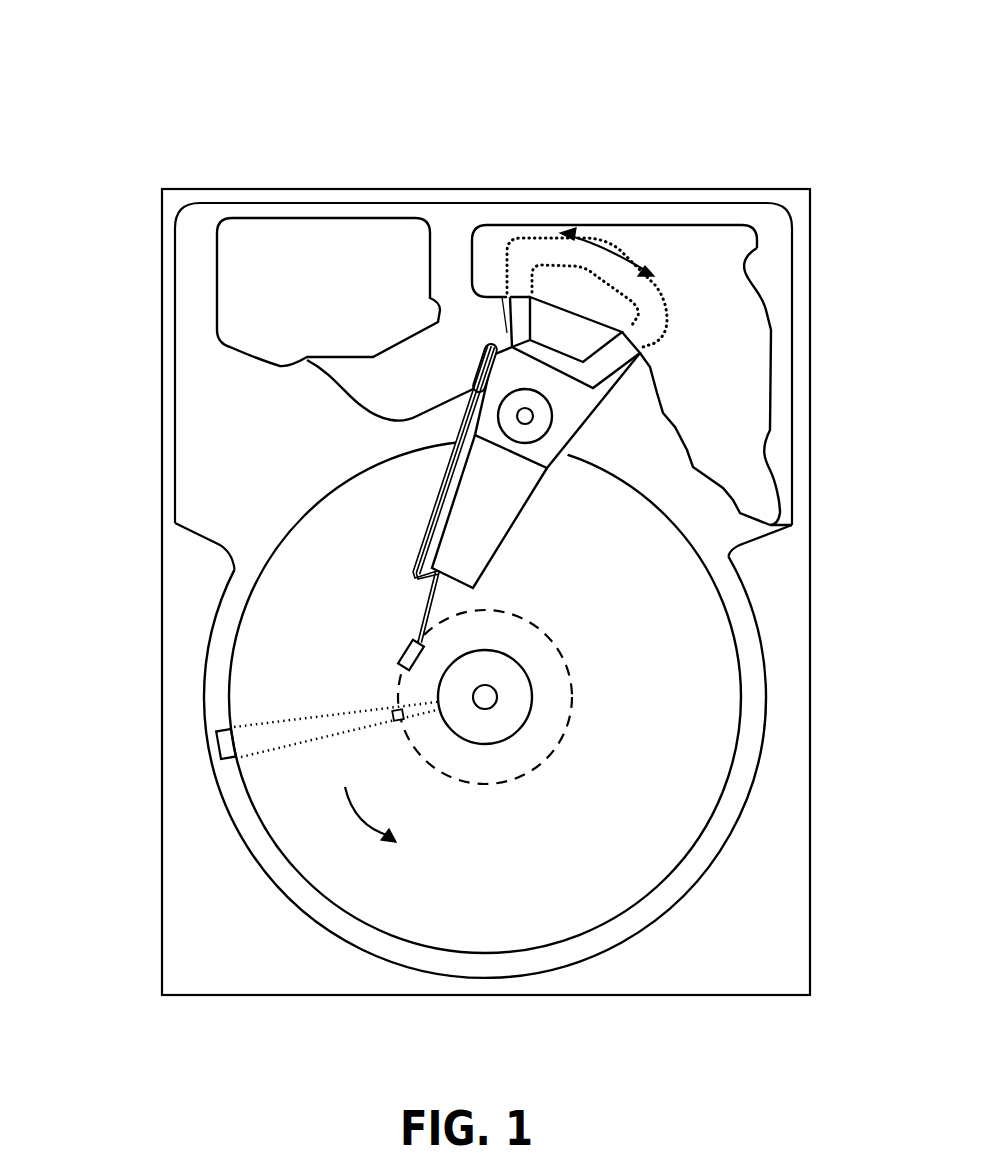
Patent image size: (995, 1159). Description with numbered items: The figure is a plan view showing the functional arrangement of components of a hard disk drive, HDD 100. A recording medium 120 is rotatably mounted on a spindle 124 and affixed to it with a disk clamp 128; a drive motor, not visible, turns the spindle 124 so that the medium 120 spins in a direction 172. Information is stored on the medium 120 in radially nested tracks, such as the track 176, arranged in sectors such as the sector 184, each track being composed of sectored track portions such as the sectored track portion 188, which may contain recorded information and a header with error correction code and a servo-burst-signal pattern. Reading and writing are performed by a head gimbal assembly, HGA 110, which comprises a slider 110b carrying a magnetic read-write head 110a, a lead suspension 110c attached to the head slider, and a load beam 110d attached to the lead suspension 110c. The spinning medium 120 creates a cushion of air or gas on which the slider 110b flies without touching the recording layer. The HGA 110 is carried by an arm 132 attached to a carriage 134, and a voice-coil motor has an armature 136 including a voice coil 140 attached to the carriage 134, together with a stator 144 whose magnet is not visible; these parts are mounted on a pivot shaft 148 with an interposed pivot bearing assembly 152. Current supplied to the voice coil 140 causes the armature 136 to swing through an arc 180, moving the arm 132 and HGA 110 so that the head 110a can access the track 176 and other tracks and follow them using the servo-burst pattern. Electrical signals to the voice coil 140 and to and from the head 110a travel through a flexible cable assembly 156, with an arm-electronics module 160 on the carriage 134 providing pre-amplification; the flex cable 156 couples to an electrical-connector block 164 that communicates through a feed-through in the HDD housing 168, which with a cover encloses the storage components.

The HDD 100 is at (92, 72).
The head gimbal assembly 110 is at (86, 505).
The magnetic read-write head 110a is at (400, 660).
The slider 110b is at (422, 602).
The lead suspension 110c is at (427, 583).
The load beam 110d is at (413, 572).
The recording medium 120 is at (668, 648).
The spindle 124 is at (487, 698).
The disk clamp 128 is at (510, 713).
The arm 132 is at (477, 530).
The carriage 134 is at (543, 448).
The armature 136 is at (497, 290).
The voice coil 140 is at (520, 307).
The stator 144 is at (737, 317).
The pivot shaft 148 is at (532, 416).
The pivot bearing assembly 152 is at (538, 428).
The flexible cable assembly 156 is at (343, 390).
The arm-electronics module 160 is at (477, 378).
The electrical-connector block 164 is at (243, 290).
The HDD housing 168 is at (792, 203).
The direction 172 is at (396, 813).
The track 176 is at (562, 657).
The arc 180 is at (603, 243).
The sector 184 is at (218, 745).
The sectored track portion 188 is at (393, 713).